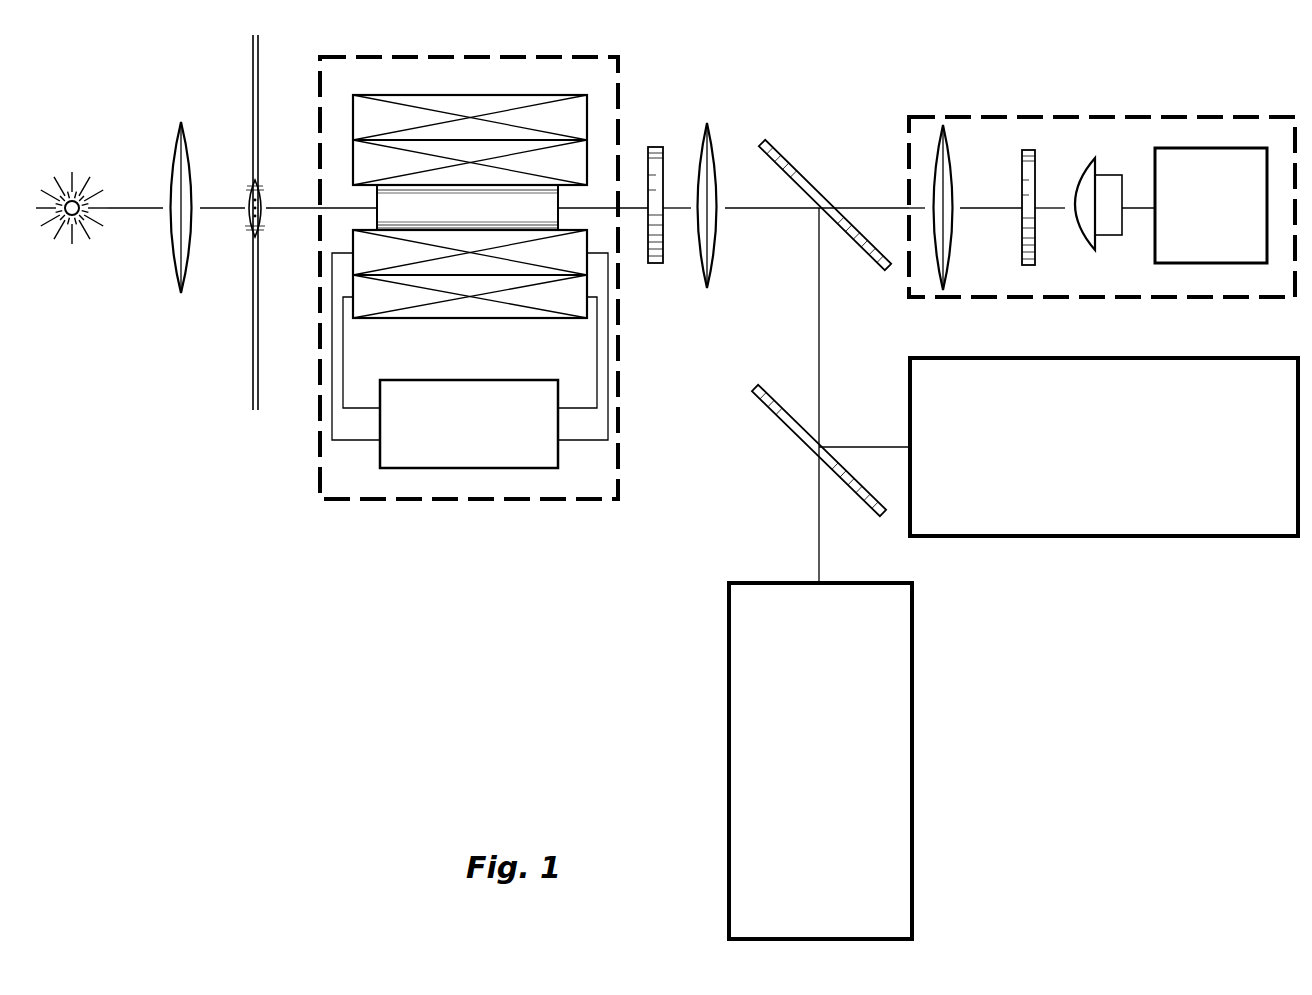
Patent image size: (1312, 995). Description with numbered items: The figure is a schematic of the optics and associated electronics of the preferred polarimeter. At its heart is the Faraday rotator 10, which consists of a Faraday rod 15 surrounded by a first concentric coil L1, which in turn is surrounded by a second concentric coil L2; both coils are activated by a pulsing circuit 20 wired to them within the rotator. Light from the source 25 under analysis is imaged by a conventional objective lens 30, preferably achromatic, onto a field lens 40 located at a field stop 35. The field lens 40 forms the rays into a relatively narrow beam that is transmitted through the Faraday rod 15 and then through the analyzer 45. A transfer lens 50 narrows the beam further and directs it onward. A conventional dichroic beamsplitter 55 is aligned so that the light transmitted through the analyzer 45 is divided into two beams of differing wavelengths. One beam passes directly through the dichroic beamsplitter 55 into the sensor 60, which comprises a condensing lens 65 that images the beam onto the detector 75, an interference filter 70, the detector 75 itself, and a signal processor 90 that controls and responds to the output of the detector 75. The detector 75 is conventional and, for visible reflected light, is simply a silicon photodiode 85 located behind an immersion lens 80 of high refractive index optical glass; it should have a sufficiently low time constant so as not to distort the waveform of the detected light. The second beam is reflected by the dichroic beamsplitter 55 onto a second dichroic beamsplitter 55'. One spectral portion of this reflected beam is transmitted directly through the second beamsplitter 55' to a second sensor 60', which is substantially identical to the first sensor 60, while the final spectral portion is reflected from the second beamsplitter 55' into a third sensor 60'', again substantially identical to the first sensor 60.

The Faraday rotator 10 is at (500, 518).
The Faraday rod 15 is at (377, 212).
The pulsing circuit 20 is at (548, 458).
The source 25 is at (62, 168).
The objective lens 30 is at (172, 138).
The field stop 35 is at (253, 48).
The field lens 40 is at (248, 190).
The analyzer 45 is at (656, 147).
The transfer lens 50 is at (704, 142).
The dichroic beamsplitter 55 is at (825, 177).
The second dichroic beamsplitter 55' is at (793, 450).
The sensor 60 is at (1102, 189).
The second sensor 60' is at (863, 761).
The third sensor 60'' is at (1104, 474).
The condensing lens 65 is at (938, 143).
The interference filter 70 is at (1028, 150).
The detector 75 is at (1100, 185).
The immersion lens 80 is at (1080, 226).
The photodiode 85 is at (1113, 228).
The signal processor 90 is at (1224, 244).
The first concentric coil L1 is at (420, 104).
The second concentric coil L2 is at (528, 147).